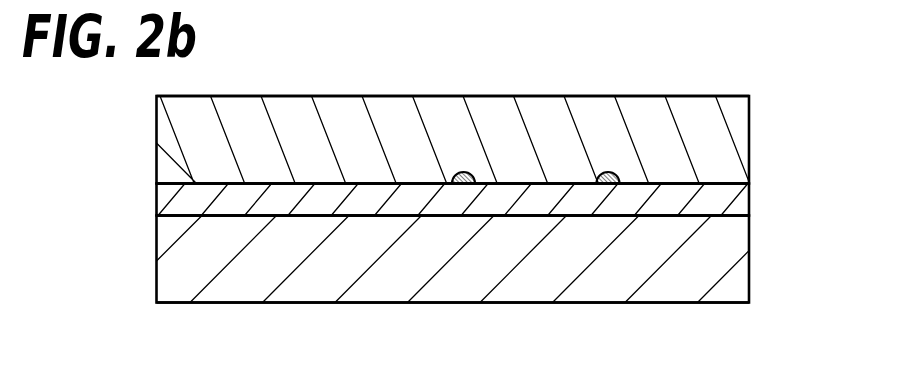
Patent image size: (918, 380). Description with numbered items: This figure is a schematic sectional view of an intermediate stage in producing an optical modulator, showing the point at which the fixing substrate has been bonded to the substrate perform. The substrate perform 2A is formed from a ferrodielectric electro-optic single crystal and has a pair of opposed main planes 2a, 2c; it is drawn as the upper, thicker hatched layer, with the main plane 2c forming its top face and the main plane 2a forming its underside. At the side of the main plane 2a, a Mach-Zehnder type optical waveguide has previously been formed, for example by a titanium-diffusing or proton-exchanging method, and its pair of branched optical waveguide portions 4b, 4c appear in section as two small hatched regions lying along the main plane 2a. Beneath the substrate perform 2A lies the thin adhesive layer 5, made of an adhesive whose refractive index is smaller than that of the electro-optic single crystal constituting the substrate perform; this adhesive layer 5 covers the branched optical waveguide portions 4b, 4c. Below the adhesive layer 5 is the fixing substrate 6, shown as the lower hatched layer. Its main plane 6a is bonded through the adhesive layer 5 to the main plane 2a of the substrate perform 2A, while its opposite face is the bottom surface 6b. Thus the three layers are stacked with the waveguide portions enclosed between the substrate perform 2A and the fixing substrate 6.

The substrate perform 2A is at (740, 158).
The main plane 2a is at (683, 185).
The main plane 2c is at (647, 96).
The branched optical waveguide portion 4b is at (606, 172).
The branched optical waveguide portion 4c is at (460, 172).
The adhesive layer 5 is at (735, 208).
The fixing substrate 6 is at (657, 287).
The main plane 6a is at (332, 196).
The bottom surface 6b is at (363, 303).